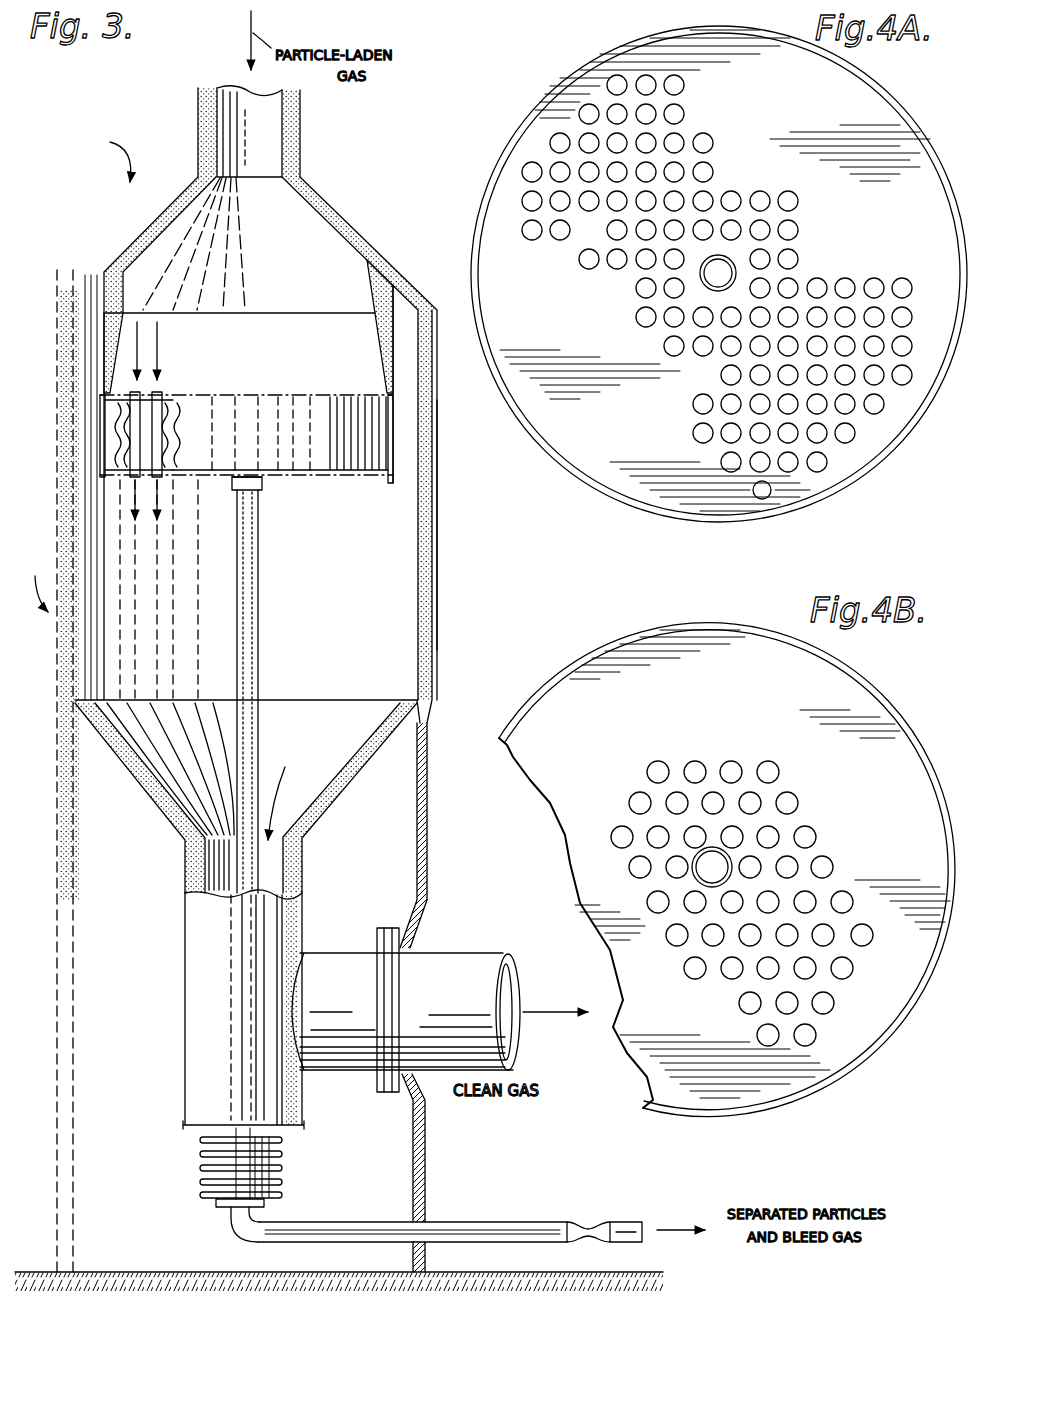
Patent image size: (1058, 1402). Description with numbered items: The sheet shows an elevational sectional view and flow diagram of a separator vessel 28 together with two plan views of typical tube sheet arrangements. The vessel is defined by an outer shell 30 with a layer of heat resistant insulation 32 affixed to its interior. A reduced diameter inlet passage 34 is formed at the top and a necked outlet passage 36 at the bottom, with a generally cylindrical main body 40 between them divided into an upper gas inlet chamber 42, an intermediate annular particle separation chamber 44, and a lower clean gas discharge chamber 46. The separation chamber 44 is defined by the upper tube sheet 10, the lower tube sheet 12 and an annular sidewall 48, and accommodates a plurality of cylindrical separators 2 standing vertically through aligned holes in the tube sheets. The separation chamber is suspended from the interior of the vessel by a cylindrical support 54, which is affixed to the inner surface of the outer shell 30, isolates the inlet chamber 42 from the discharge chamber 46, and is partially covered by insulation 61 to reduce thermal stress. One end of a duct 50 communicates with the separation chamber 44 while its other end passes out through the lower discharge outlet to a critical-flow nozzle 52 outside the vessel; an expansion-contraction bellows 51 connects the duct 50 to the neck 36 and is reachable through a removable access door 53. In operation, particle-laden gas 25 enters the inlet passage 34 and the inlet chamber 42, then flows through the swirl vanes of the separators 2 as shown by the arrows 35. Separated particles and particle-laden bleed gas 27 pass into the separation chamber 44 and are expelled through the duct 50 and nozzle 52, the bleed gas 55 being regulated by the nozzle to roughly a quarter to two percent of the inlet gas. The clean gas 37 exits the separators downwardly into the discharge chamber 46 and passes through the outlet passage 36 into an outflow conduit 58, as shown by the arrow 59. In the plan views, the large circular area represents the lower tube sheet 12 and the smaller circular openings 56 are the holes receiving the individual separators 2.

In FIG. 3, the separator 2 is at (170, 455).
In FIG. 4A, the separator 2 is at (713, 143).
In FIG. 4B, the separator 2 is at (767, 760).
In FIG. 3, the upper tube sheet 10 is at (254, 395).
In FIG. 3, the lower tube sheet 12 is at (220, 479).
In FIG. 4A, the lower tube sheet 12 is at (608, 452).
In FIG. 4B, the lower tube sheet 12 is at (703, 1077).
In FIG. 3, the gas 25 is at (253, 20).
In FIG. 3, the particle-laden bleed gas 27 is at (157, 458).
In FIG. 3, the separator vessel 28 is at (103, 157).
In FIG. 3, the outer shell 30 is at (434, 596).
In FIG. 3, the heat resistant insulation 32 is at (436, 530).
In FIG. 3, the inlet passage 34 is at (223, 84).
In FIG. 3, the arrows 35 is at (157, 363).
In FIG. 3, the outlet passage 36 is at (272, 866).
In FIG. 3, the clean gas 37 is at (142, 528).
In FIG. 3, the main body 40 is at (39, 580).
In FIG. 3, the gas inlet chamber 42 is at (281, 267).
In FIG. 3, the annular particle separation chamber 44 is at (304, 418).
In FIG. 4A, the annular particle separation chamber 44 is at (840, 95).
In FIG. 4B, the annular particle separation chamber 44 is at (840, 697).
In FIG. 3, the clean gas discharge chamber 46 is at (326, 748).
In FIG. 3, the annular sidewall 48 is at (393, 453).
In FIG. 4A, the annular sidewall 48 is at (835, 490).
In FIG. 4B, the annular sidewall 48 is at (672, 623).
In FIG. 3, the duct 50 is at (253, 638).
In FIG. 4A, the duct 50 is at (738, 266).
In FIG. 4B, the duct 50 is at (730, 850).
In FIG. 3, the bellows 51 is at (200, 1169).
In FIG. 3, the critical-flow nozzle 52 is at (592, 1222).
In FIG. 3, the removable access door 53 is at (72, 295).
In FIG. 3, the support 54 is at (385, 339).
In FIG. 3, the bleed gas 55 is at (262, 508).
In FIG. 4A, the circular openings 56 is at (903, 385).
In FIG. 4B, the circular openings 56 is at (865, 946).
In FIG. 3, the outflow conduit 58 is at (470, 953).
In FIG. 3, the arrow 59 is at (553, 1073).
In FIG. 3, the insulation 61 is at (405, 333).